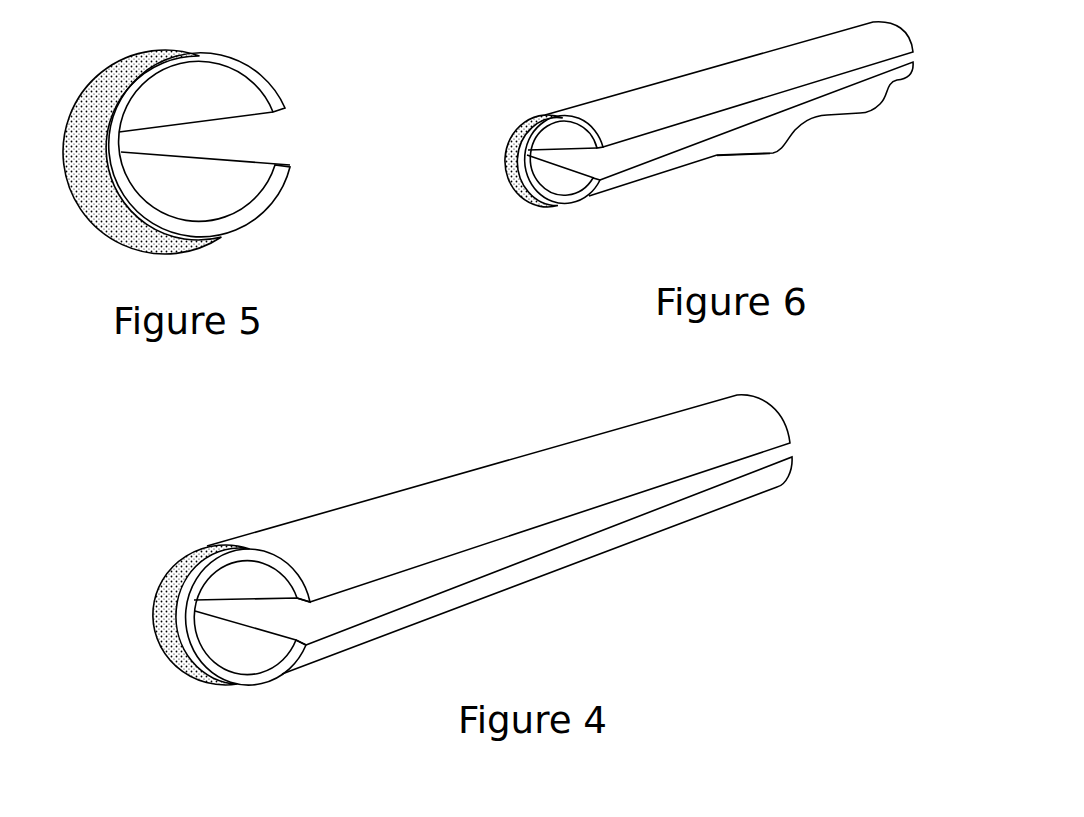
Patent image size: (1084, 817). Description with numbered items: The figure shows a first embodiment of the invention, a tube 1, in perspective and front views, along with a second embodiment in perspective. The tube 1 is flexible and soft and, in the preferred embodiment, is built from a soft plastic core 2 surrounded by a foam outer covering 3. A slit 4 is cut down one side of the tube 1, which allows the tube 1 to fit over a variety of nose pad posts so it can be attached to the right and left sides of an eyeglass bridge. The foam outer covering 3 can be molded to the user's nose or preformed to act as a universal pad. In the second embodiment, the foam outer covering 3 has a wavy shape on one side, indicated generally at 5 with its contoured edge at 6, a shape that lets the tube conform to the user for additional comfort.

In FIG. 4, the tube 1 is at (618, 560).
In FIG. 5, the soft plastic core 2 is at (275, 75).
In FIG. 5, the foam outer covering 3 is at (103, 222).
In FIG. 5, the slit 4 is at (255, 133).
In FIG. 6, the notched end portion 5 is at (820, 157).
In FIG. 6, the cut edge 6 is at (765, 155).